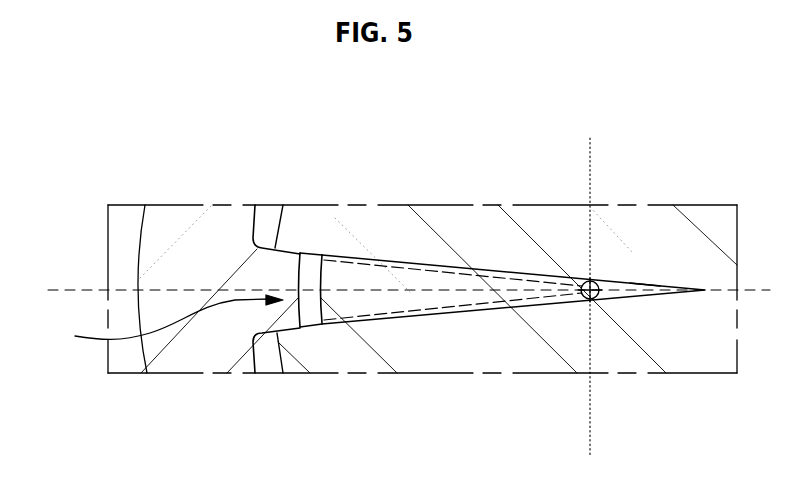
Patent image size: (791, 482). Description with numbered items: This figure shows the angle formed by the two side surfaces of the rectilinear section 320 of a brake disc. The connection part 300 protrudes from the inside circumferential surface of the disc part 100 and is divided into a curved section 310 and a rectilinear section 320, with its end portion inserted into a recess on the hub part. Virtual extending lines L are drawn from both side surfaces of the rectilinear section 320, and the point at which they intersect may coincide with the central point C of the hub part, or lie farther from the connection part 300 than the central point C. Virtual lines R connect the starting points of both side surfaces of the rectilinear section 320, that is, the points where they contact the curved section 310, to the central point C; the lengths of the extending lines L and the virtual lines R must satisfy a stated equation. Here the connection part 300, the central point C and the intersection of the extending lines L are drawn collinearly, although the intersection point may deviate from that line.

The disc part 100 is at (193, 228).
The connection part 300 is at (156, 322).
The curved section 310 is at (272, 238).
The rectilinear section 320 is at (302, 252).
The central point C is at (588, 281).
The extending lines L is at (630, 282).
The virtual lines R is at (503, 280).